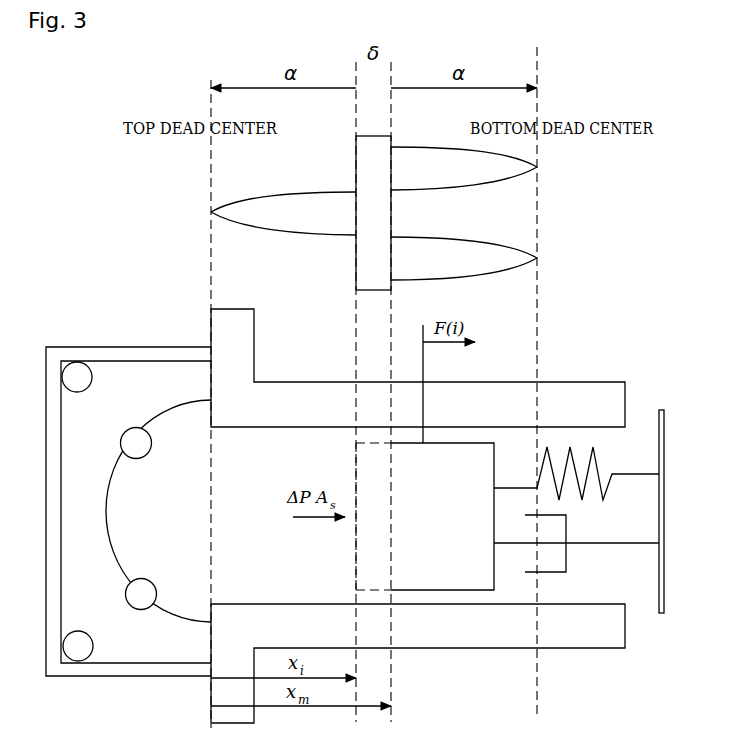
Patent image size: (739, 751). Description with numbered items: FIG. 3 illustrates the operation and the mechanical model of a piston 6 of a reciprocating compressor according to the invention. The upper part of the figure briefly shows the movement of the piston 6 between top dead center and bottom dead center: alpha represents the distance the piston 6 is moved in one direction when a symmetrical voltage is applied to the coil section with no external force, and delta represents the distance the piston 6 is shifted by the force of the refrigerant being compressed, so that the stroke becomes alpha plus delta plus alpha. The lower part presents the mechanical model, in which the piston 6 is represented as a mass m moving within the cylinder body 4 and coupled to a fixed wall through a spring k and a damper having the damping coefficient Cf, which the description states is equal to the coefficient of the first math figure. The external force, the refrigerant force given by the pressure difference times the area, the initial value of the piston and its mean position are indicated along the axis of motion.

The cylinder 4 is at (578, 382).
The piston 6 is at (425, 582).
The piston mass m is at (435, 512).
The spring stiffness k is at (576, 473).
The damping coefficient Cf is at (576, 549).